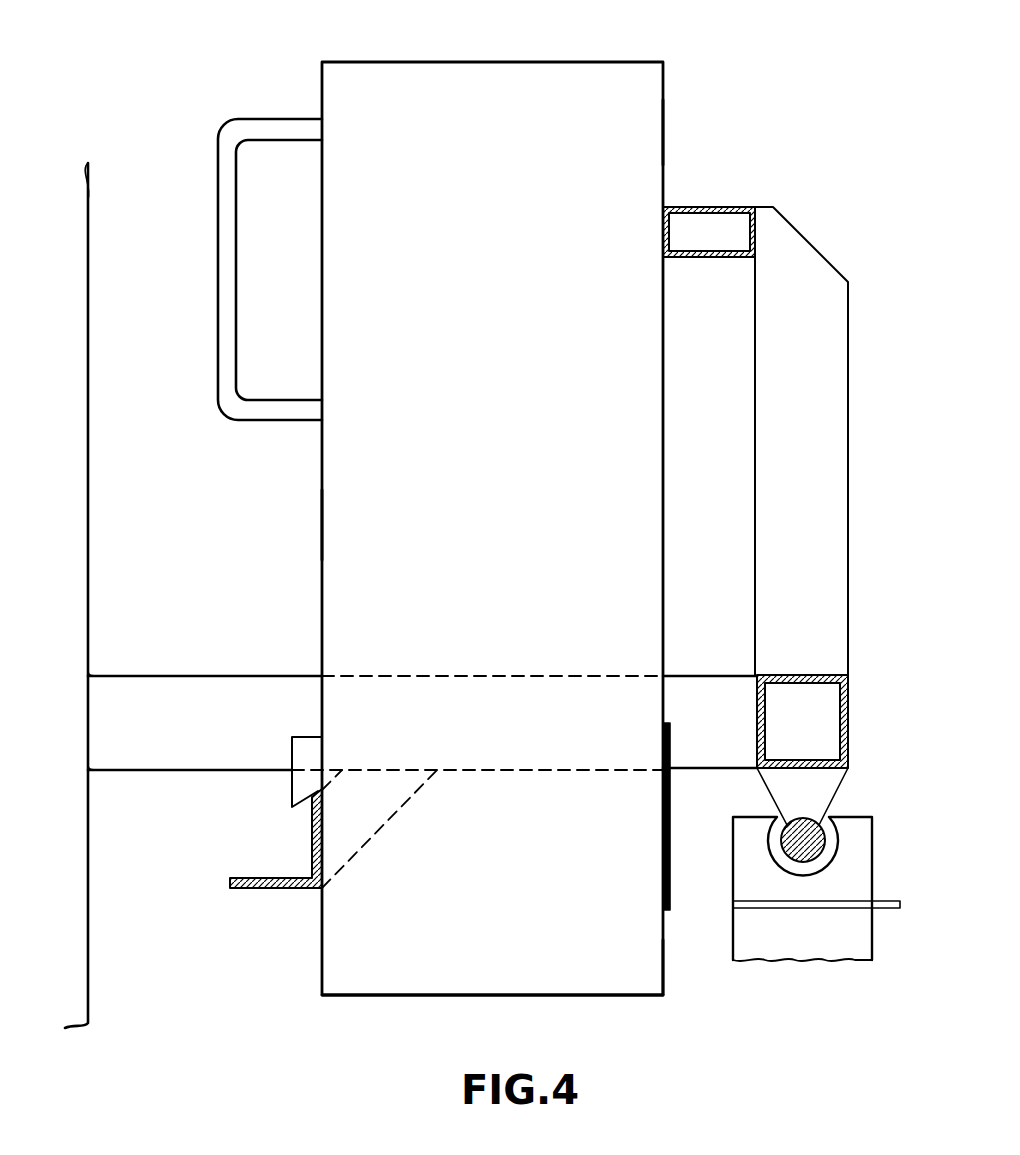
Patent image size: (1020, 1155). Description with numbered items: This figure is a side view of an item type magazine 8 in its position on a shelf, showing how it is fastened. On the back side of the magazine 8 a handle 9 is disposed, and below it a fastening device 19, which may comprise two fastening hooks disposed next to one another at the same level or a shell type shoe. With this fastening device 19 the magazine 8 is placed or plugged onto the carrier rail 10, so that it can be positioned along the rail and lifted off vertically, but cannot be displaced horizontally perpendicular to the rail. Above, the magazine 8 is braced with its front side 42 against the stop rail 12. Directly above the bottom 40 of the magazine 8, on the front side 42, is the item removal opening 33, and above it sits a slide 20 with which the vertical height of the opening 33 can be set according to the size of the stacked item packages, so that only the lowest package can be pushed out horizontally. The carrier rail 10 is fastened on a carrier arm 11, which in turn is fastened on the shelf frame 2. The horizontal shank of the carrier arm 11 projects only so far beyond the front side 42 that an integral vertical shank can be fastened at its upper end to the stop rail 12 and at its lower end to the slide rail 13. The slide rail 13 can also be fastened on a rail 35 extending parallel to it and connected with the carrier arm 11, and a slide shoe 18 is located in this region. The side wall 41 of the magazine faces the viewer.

The shelf frame 2 is at (88, 163).
The item type magazine 8 is at (594, 75).
The handle 9 is at (262, 130).
The carrier rail 10 is at (250, 890).
The carrier arm 11 is at (247, 686).
The stop rail 12 is at (722, 207).
The slide rail 13 is at (815, 824).
The slide shoe 18 is at (848, 935).
The fastening device 19 is at (300, 790).
The slide 20 is at (672, 840).
The item removal opening 33 is at (660, 975).
The rail 35 is at (826, 717).
The bottom 40 is at (530, 990).
The housing front wall 41 is at (322, 522).
The front side 42 is at (665, 131).